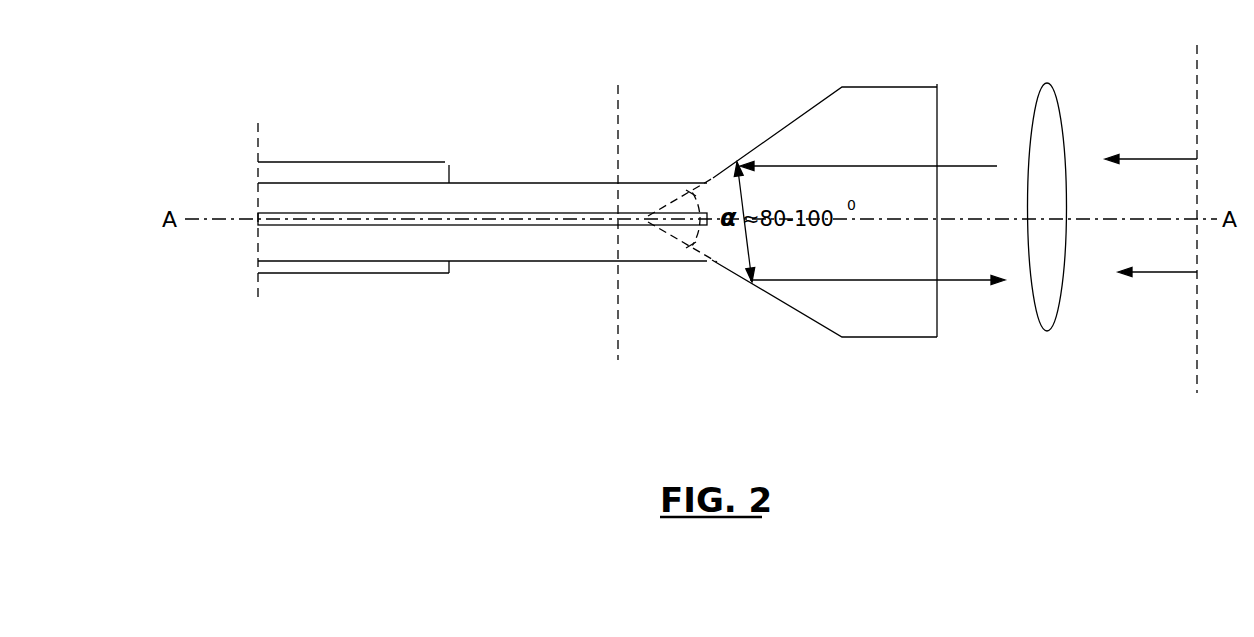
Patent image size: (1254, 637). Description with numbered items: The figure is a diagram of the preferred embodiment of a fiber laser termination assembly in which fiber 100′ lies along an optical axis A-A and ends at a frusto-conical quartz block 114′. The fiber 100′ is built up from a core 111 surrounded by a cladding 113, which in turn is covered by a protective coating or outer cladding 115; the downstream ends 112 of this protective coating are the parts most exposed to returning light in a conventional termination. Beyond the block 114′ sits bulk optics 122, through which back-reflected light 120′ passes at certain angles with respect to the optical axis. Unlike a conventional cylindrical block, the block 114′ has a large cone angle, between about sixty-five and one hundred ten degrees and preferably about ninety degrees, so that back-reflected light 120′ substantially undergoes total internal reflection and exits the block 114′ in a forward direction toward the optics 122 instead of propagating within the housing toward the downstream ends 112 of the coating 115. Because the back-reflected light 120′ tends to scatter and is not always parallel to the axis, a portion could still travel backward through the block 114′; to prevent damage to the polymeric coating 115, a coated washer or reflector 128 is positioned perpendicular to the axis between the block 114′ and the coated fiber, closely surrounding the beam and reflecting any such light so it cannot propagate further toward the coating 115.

The fiber 100′ is at (538, 337).
The core 111 is at (483, 215).
The downstream ends 112 is at (470, 273).
The cladding 113 is at (548, 208).
The frusto-conical quartz block 114′ is at (918, 308).
The protective coating or cladding 115 is at (415, 170).
The back-reflected light 120′ is at (977, 152).
The bulk optics 122 is at (1058, 275).
The coated washer or reflector 128 is at (613, 322).